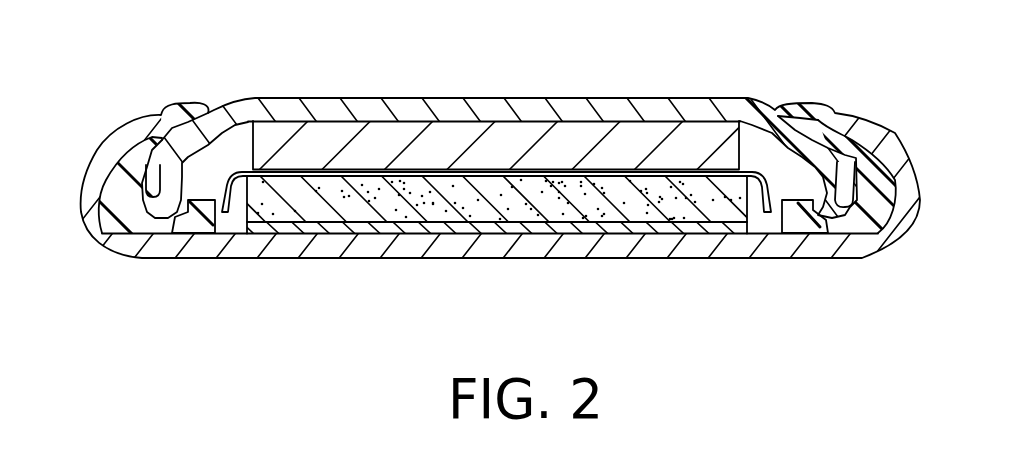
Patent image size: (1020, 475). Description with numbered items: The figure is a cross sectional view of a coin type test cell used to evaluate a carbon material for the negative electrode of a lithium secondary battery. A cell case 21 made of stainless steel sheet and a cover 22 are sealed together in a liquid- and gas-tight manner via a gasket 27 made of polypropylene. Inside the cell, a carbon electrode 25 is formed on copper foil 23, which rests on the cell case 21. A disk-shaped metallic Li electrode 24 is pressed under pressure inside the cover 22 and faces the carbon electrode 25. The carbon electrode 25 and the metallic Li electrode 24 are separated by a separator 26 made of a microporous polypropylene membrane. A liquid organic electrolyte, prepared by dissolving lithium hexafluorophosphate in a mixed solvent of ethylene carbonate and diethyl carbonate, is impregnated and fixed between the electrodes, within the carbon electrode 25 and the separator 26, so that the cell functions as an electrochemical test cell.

The cell case 21 is at (120, 133).
The cover 22 is at (252, 112).
The copper foil 23 is at (673, 228).
The metallic Li electrode 24 is at (377, 137).
The carbon electrode 25 is at (407, 213).
The separator 26 is at (543, 171).
The gasket 27 is at (810, 113).